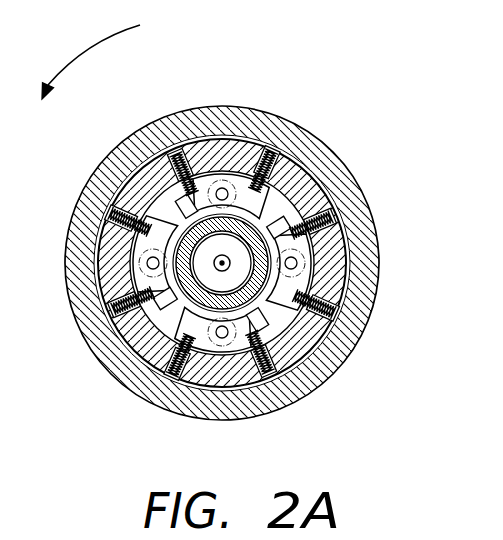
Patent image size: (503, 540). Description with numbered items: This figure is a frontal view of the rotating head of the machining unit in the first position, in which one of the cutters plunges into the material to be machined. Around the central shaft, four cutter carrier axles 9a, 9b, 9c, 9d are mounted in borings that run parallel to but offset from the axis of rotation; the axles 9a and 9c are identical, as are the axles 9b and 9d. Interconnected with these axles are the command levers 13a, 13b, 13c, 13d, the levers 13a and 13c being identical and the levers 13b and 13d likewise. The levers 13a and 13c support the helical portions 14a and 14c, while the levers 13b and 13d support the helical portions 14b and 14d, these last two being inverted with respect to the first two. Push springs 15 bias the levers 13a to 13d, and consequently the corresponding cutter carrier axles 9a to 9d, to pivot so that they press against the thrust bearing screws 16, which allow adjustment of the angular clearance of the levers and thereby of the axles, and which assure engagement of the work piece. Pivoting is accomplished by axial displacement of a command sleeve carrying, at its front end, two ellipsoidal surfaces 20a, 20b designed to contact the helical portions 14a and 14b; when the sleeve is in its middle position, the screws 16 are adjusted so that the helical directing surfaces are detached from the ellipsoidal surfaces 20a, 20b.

The cutter carrier axle 9a is at (148, 262).
The cutter carrier axle 9b is at (294, 262).
The cutter carrier axle 9c is at (221, 336).
The cutter carrier axle 9d is at (226, 192).
The command lever 13a is at (160, 237).
The command lever 13b is at (302, 285).
The command lever 13c is at (178, 354).
The command lever 13d is at (262, 198).
The helical portion 14a is at (146, 300).
The helical portion 14b is at (293, 226).
The helical portion 14c is at (257, 376).
The helical portion 14d is at (187, 202).
The push spring 15 is at (291, 368).
The screw 16 is at (347, 332).
The ellipsoidal surface 20a is at (166, 300).
The ellipsoidal surface 20b is at (281, 221).